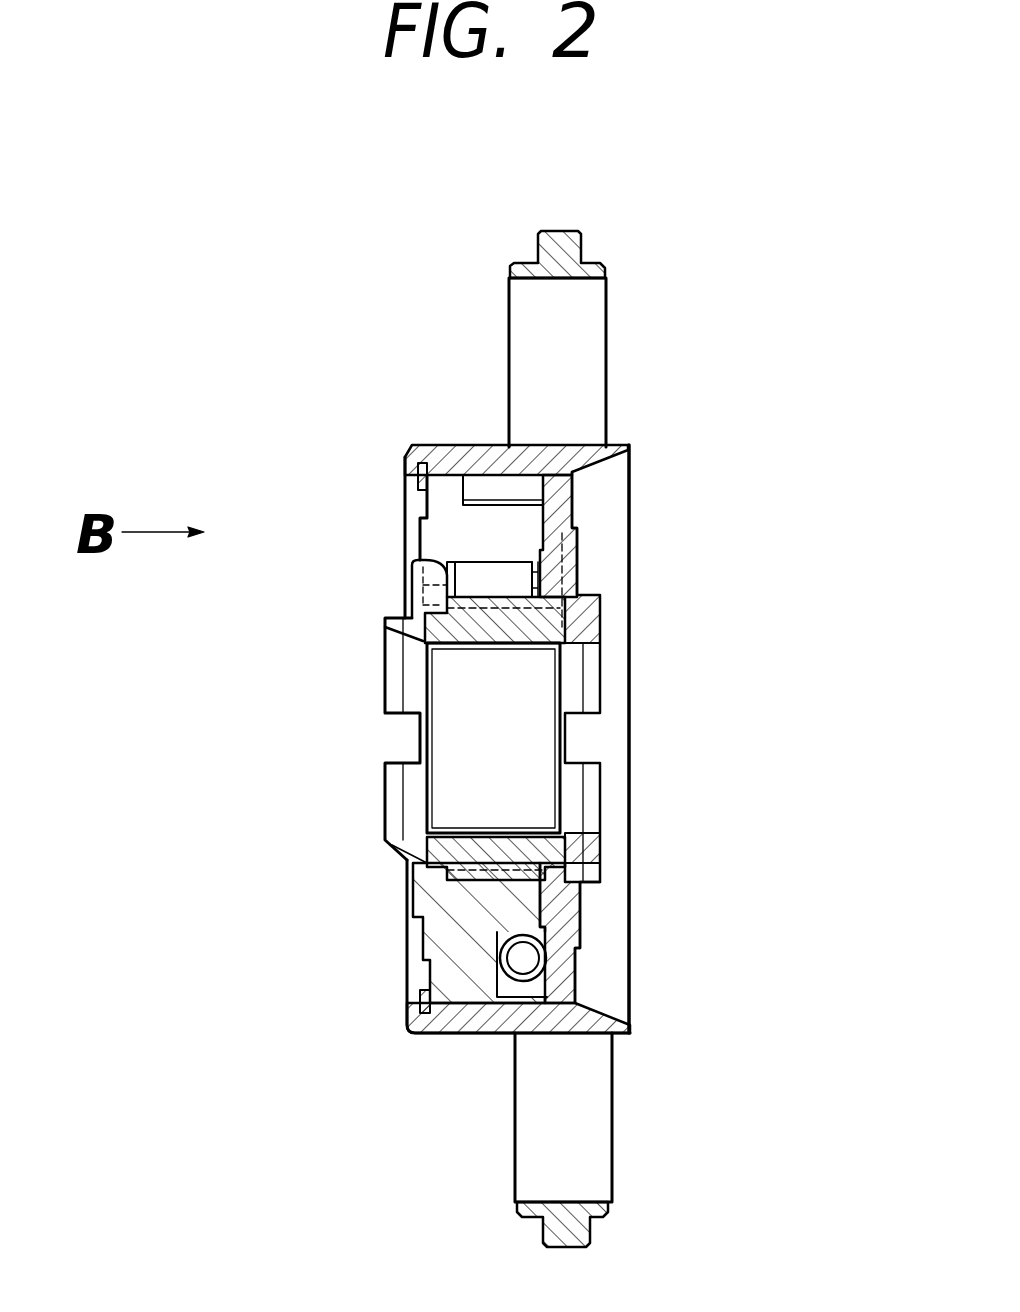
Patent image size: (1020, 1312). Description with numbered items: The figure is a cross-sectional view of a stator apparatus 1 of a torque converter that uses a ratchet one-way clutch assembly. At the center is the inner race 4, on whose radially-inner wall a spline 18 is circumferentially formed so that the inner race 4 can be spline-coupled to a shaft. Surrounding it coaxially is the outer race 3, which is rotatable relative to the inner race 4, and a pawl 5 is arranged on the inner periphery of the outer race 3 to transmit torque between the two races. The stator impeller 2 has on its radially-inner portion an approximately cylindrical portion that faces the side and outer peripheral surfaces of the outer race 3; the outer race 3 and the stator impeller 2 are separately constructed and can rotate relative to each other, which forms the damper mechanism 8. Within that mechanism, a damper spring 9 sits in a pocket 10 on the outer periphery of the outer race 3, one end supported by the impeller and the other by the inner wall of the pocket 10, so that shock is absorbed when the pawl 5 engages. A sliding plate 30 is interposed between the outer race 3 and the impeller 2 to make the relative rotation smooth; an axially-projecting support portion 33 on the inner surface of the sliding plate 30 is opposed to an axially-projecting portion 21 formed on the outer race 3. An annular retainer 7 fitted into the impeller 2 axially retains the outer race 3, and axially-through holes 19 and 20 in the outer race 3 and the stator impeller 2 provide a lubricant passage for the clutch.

The stator apparatus 1 is at (672, 172).
The stator impeller 2 is at (590, 318).
The outer race 3 is at (437, 500).
The inner race 4 is at (532, 662).
The pawl 5 is at (513, 568).
The annular retainer 7 is at (412, 476).
The damper mechanism 8 is at (553, 987).
The damper spring 9 is at (546, 960).
The pocket 10 is at (512, 1000).
The spline 18 is at (436, 666).
The axially-through hole 19 is at (432, 597).
The axially-through hole 20 is at (585, 612).
The axially-projecting portion 21 is at (440, 555).
The sliding plate 30 is at (545, 563).
The axially-projecting support portion 33 is at (562, 582).